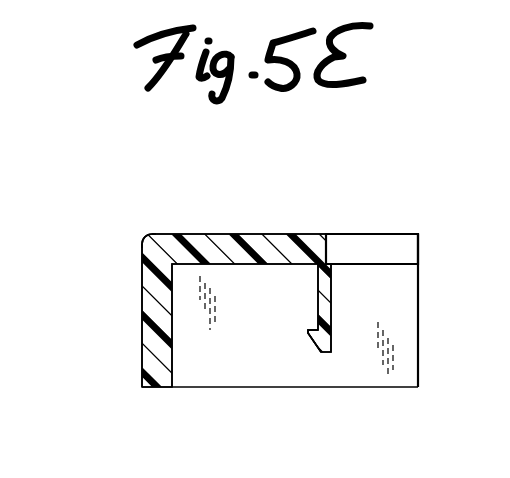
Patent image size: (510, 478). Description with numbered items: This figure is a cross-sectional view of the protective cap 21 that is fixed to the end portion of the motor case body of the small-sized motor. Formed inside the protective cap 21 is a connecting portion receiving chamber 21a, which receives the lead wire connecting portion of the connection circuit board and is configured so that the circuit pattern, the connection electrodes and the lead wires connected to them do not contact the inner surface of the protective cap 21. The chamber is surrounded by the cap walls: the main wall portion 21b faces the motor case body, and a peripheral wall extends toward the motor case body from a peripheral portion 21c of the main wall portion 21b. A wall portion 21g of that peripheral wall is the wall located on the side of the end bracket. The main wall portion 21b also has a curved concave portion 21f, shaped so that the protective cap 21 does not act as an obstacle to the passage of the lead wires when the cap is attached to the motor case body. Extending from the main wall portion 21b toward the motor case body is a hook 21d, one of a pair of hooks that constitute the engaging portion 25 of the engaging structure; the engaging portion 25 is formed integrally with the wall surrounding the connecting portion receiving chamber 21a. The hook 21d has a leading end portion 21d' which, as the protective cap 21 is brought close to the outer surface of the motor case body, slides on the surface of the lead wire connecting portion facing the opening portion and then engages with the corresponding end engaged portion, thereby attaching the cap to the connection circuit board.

The protective cap 21 is at (142, 277).
The connecting portion receiving chamber 21a is at (197, 304).
The main wall portion 21b is at (232, 236).
The peripheral portion 21c is at (143, 238).
The hook 21d is at (361, 352).
The leading end portion 21d' is at (179, 366).
The curved concave portion 21f is at (380, 245).
The wall portion 21g is at (153, 345).
The engaging portion 25 is at (333, 307).